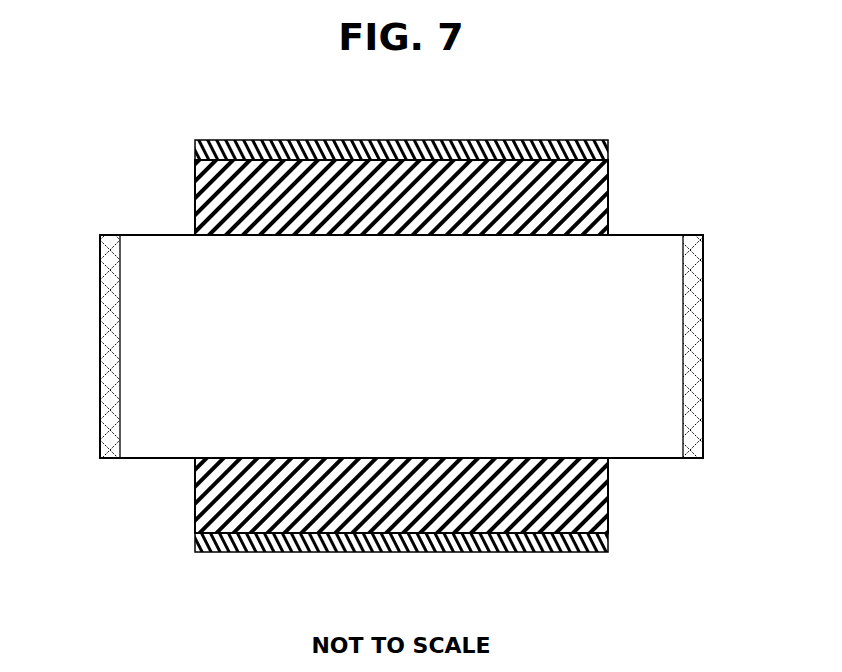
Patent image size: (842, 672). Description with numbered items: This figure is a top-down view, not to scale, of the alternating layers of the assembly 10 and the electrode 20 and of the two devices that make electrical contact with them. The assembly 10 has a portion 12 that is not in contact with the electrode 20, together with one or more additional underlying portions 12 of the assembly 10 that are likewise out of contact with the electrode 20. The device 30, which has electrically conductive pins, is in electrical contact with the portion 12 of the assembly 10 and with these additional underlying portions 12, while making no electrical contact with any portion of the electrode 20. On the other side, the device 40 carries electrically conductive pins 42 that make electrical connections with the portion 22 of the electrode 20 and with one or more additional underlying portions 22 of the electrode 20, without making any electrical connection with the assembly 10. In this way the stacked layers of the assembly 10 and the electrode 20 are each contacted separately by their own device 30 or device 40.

The assembly 10 is at (157, 438).
The portion of the assembly 12 is at (103, 235).
The electrode 20 is at (607, 172).
The portion of the electrode 22 is at (612, 459).
The device 30 is at (102, 422).
The device 40 is at (496, 140).
The electrically conductive pins 42 is at (195, 497).